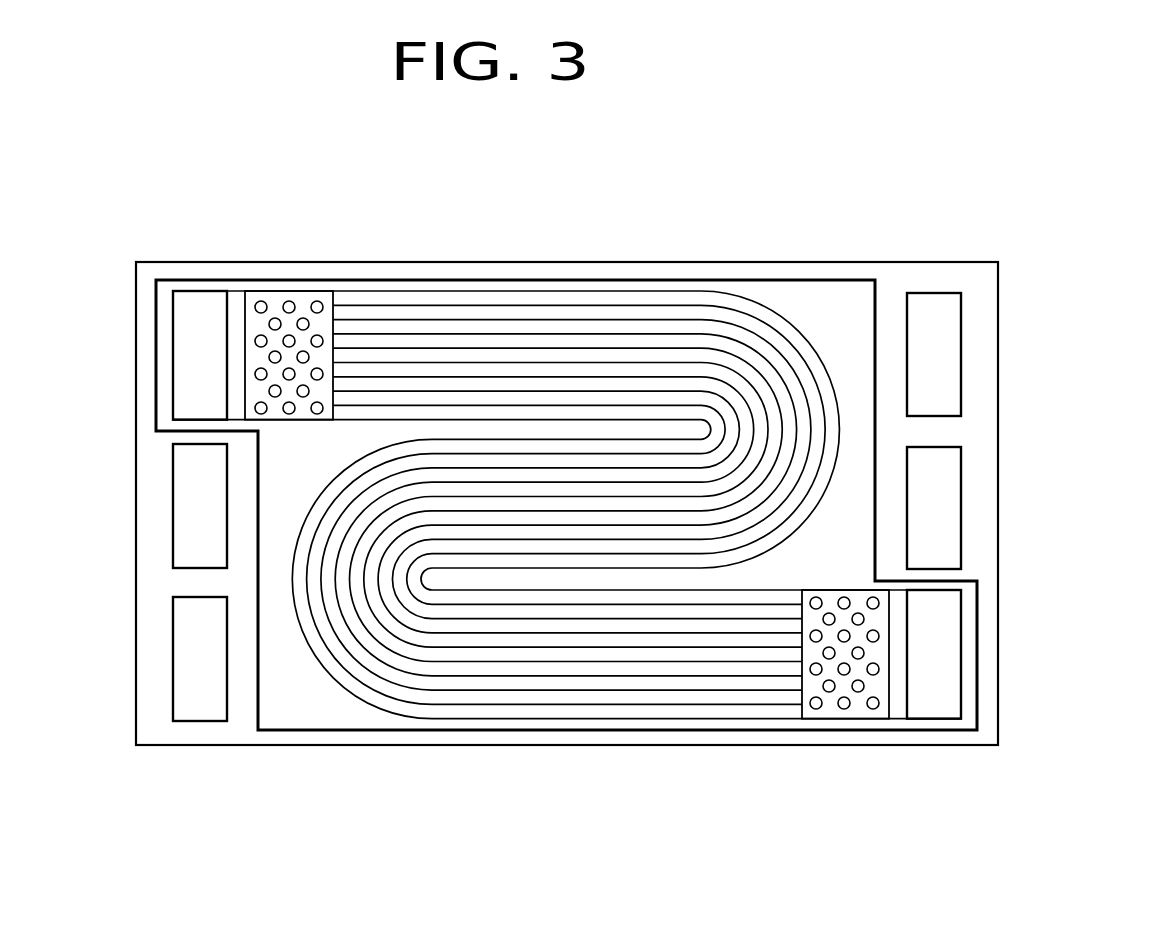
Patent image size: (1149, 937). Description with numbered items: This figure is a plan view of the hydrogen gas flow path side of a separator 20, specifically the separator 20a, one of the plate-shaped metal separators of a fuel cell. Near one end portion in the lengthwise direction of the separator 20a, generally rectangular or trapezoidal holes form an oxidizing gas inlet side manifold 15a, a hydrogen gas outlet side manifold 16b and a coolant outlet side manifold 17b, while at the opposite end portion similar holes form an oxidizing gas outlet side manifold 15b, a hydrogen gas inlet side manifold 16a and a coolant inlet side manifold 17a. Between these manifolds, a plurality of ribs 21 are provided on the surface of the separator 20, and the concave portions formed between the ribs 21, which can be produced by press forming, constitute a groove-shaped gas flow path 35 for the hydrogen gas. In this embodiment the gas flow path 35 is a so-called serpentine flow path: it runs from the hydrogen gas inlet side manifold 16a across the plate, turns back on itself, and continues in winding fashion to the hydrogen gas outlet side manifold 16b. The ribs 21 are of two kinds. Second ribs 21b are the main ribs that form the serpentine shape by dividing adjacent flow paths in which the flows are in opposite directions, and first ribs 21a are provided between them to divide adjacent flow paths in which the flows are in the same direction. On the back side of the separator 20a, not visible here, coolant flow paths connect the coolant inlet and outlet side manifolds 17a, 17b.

The separator 20 is at (567, 437).
The separator 20a is at (240, 280).
The hydrogen gas inlet side manifold 16a is at (208, 292).
The hydrogen gas outlet side manifold 16b is at (928, 592).
The coolant inlet side manifold 17a is at (208, 445).
The coolant outlet side manifold 17b is at (928, 449).
The oxidizing gas inlet side manifold 15a is at (928, 295).
The oxidizing gas outlet side manifold 15b is at (208, 598).
The ribs 21 is at (567, 516).
The first ribs 21a is at (560, 404).
The second ribs 21b is at (678, 428).
The gas flow path for hydrogen gas 35 is at (425, 575).